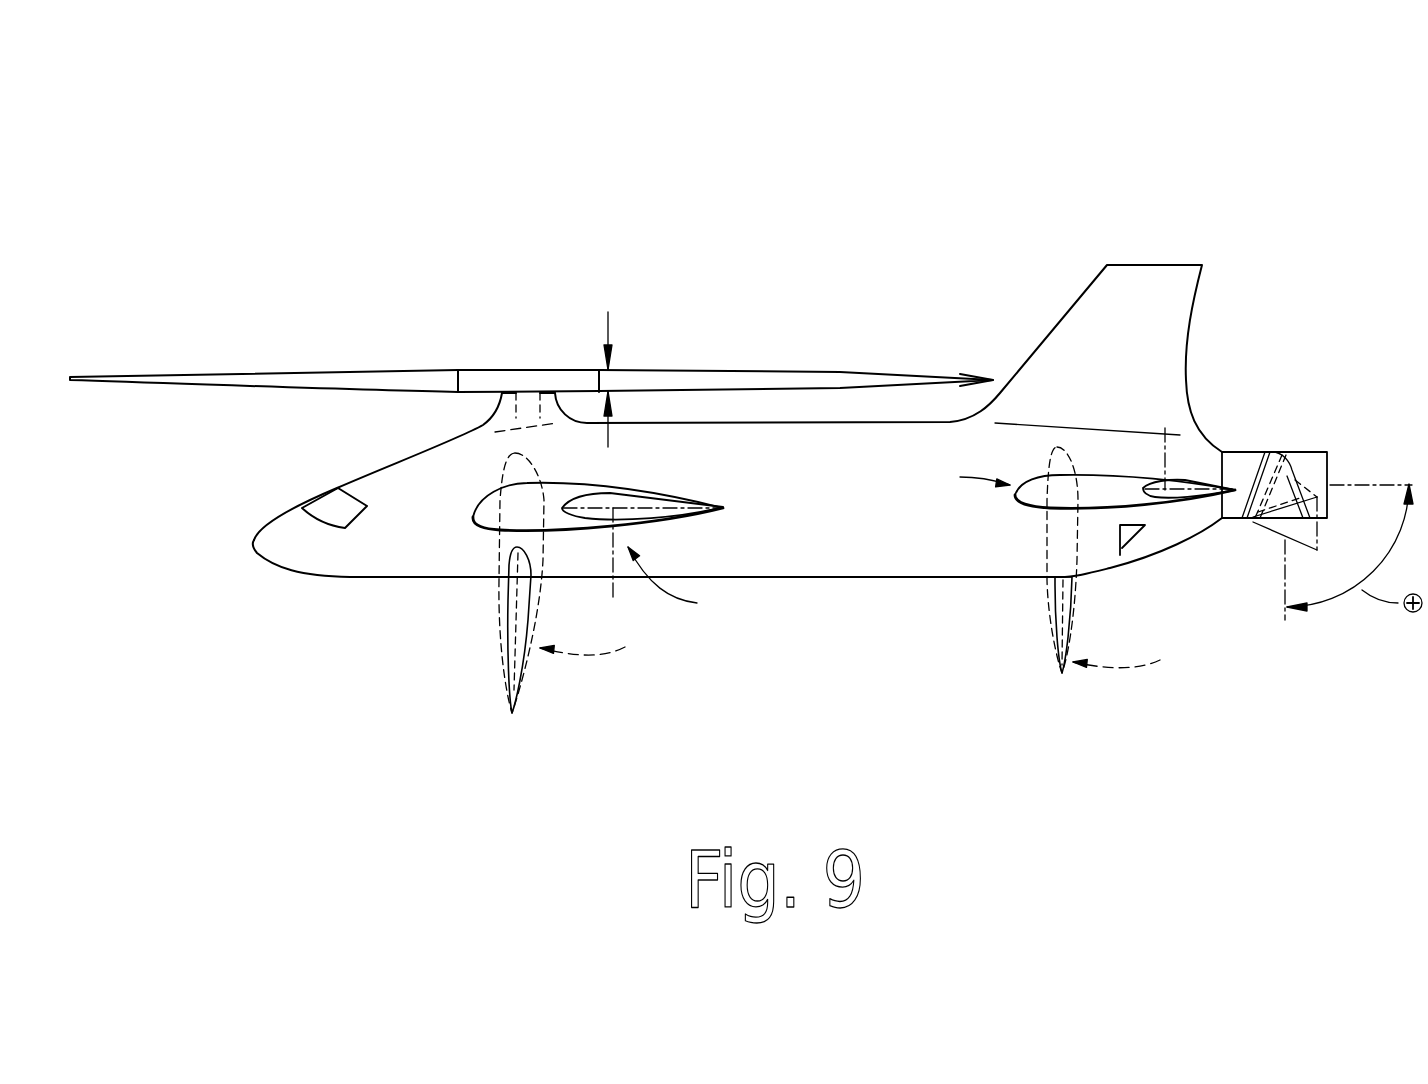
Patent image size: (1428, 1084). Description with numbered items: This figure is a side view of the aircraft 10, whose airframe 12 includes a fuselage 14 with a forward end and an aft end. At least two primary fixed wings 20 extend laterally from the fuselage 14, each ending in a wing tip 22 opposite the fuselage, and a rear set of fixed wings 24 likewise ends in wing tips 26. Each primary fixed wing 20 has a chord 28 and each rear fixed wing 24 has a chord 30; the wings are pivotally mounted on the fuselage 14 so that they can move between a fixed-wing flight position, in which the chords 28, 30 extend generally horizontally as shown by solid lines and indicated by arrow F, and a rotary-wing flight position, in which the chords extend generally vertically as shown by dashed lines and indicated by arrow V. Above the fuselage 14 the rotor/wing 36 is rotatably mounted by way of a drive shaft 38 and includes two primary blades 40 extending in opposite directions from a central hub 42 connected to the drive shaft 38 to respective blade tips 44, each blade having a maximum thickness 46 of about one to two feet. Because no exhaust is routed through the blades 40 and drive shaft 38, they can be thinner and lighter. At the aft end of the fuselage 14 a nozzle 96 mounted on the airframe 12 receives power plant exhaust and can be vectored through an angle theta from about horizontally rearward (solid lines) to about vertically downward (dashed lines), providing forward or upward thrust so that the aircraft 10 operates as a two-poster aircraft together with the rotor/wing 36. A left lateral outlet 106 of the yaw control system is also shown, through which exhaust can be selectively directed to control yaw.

The aircraft 10 is at (993, 128).
The airframe 12 is at (763, 695).
The fuselage 14 is at (881, 578).
The primary fixed wing 20 is at (480, 512).
The wing tip 22 is at (647, 495).
The rear fixed wing 24 is at (1025, 505).
The wing tip 26 is at (1148, 480).
The chord 28 is at (517, 623).
The chord 30 is at (1167, 430).
The rotor/wing 36 is at (537, 338).
The drive shaft 38 is at (500, 400).
The blade 40 is at (715, 370).
The central hub 42 is at (500, 368).
The blade tip 44 is at (993, 381).
The maximum thickness 46 is at (612, 325).
The nozzle 96 is at (1268, 452).
The left lateral outlet 106 is at (1148, 540).